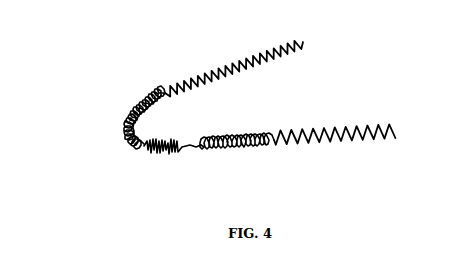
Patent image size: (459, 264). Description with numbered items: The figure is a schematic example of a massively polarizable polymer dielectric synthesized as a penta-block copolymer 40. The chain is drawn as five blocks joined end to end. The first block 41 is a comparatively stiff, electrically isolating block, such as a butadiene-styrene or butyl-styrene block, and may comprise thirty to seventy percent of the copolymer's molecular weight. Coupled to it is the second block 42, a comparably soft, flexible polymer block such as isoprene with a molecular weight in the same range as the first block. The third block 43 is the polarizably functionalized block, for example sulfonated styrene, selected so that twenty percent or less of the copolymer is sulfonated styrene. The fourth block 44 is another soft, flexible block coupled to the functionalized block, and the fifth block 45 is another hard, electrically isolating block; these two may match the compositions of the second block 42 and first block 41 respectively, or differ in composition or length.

The penta-block copolymer 40 is at (92, 71).
The first block 41 is at (319, 146).
The second block 42 is at (232, 150).
The third block 43 is at (163, 149).
The fourth block 44 is at (125, 118).
The fifth block 45 is at (224, 64).